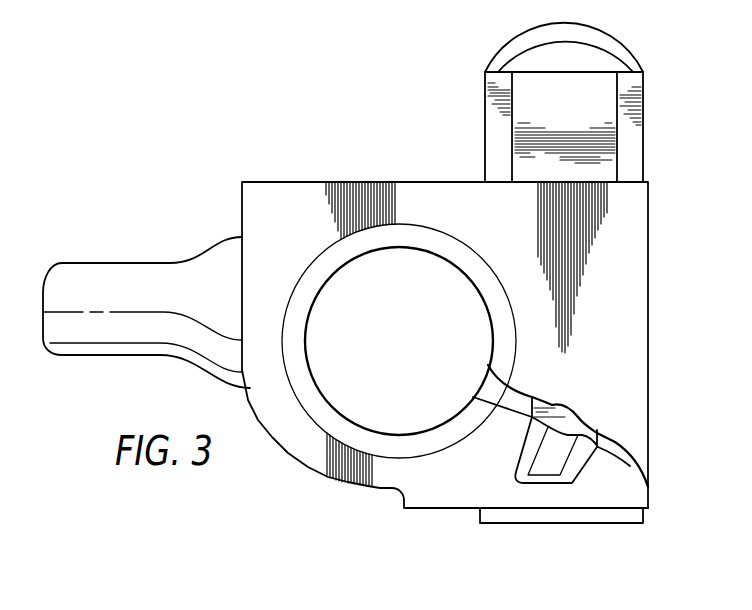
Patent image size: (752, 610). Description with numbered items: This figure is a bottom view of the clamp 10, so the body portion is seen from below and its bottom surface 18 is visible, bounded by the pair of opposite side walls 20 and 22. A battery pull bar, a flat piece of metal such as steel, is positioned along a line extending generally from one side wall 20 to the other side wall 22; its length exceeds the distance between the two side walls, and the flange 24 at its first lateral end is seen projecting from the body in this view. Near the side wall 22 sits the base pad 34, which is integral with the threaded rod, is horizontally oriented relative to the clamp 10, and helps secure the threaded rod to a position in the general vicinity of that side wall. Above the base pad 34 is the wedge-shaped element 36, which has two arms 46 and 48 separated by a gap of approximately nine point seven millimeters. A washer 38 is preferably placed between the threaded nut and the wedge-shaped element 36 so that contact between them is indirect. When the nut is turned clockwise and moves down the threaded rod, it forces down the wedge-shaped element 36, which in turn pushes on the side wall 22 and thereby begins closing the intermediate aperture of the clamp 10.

The clamp 10 is at (196, 110).
The bottom surface 18 is at (607, 387).
The side wall 20 is at (437, 524).
The side wall 22 is at (302, 182).
The flange 24 is at (522, 515).
The base pad 34 is at (591, 98).
The wedge-shaped element 36 is at (456, 117).
The washer 38 is at (593, 38).
The arm 46 is at (628, 145).
The arm 48 is at (499, 155).